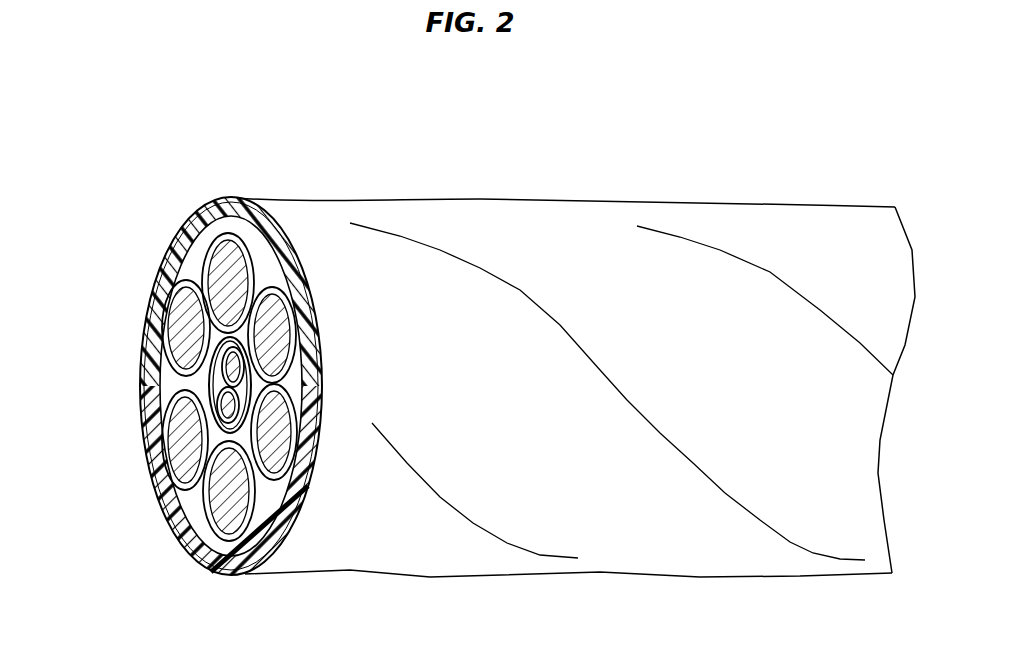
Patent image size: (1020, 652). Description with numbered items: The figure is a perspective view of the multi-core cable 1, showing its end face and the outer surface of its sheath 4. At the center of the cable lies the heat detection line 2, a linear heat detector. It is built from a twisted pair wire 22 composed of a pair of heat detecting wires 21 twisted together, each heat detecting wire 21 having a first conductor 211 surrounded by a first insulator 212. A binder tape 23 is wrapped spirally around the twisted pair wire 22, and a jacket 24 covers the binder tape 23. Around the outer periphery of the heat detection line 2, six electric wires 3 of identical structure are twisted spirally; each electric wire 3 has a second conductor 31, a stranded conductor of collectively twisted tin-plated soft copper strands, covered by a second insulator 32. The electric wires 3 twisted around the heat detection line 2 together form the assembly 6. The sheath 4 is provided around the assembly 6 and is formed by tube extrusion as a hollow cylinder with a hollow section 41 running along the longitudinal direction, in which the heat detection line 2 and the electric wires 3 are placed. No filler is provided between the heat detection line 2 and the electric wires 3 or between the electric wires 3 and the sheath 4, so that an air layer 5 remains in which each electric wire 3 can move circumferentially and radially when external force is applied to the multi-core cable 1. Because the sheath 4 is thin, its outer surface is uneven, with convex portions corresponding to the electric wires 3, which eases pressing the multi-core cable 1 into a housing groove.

The multi-core cable 1 is at (792, 175).
The heat detection line 2 is at (167, 292).
The heat detecting wire 21 is at (140, 361).
The first conductor 211 is at (216, 350).
The first insulator 212 is at (222, 385).
The twisted pair wire 22 is at (205, 395).
The binder tape 23 is at (192, 393).
The jacket 24 is at (210, 430).
The electric wire 3 is at (274, 347).
The second conductor 31 is at (298, 272).
The second insulator 32 is at (285, 293).
The sheath 4 is at (564, 232).
The hollow section 41 is at (265, 513).
The air layer 5 is at (192, 498).
The assembly 6 is at (203, 250).